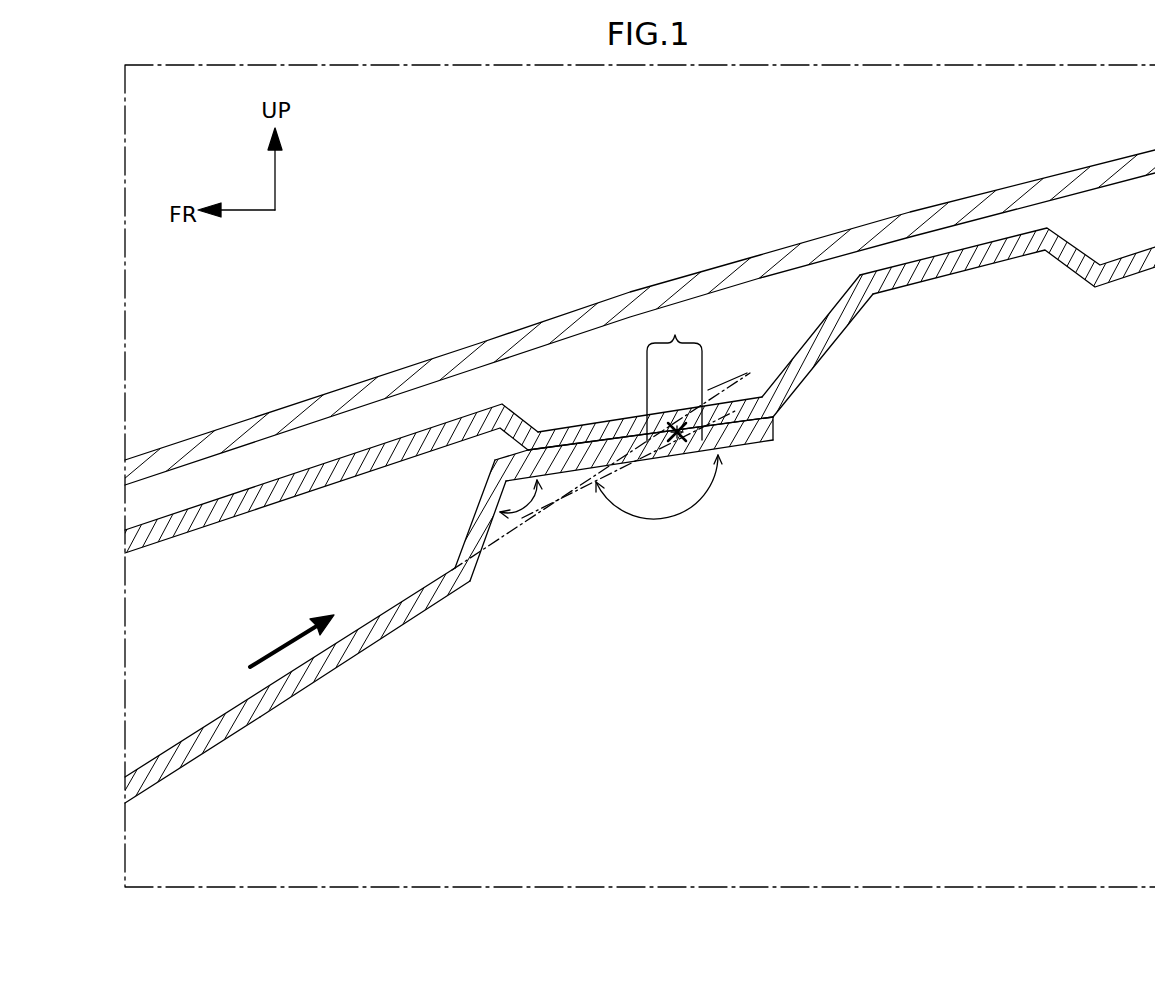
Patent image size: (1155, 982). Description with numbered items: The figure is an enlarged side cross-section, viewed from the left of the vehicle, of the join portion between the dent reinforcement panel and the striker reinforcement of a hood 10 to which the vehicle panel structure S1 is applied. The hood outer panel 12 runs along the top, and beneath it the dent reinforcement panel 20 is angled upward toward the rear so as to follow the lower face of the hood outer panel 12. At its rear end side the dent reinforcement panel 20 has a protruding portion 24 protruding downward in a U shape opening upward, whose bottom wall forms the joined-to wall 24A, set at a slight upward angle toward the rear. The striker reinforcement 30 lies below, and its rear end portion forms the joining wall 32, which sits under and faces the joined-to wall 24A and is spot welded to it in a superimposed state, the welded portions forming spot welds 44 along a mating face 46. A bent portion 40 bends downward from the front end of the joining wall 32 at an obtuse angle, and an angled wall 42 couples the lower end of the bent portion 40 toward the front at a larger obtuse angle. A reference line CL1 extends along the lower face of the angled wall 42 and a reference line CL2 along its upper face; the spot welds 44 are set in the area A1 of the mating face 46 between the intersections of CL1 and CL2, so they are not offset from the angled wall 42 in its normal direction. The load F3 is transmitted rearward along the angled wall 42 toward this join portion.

The hood 10 is at (864, 183).
The hood outer panel 12 is at (765, 252).
The dent reinforcement panel 20 is at (972, 273).
The protruding portion 24 is at (838, 347).
The joined-to wall 24A is at (590, 429).
The striker reinforcement 30 is at (347, 666).
The joining wall 32 is at (754, 447).
The bent portion 40 is at (476, 506).
The angled wall 42 is at (237, 735).
The spot weld 44 is at (686, 424).
The mating face 46 is at (780, 432).
The area A1 is at (675, 335).
The reference line CL1 is at (497, 570).
The reference line CL2 is at (568, 506).
The vehicle panel structure S1 is at (733, 594).
The load F3 is at (283, 645).